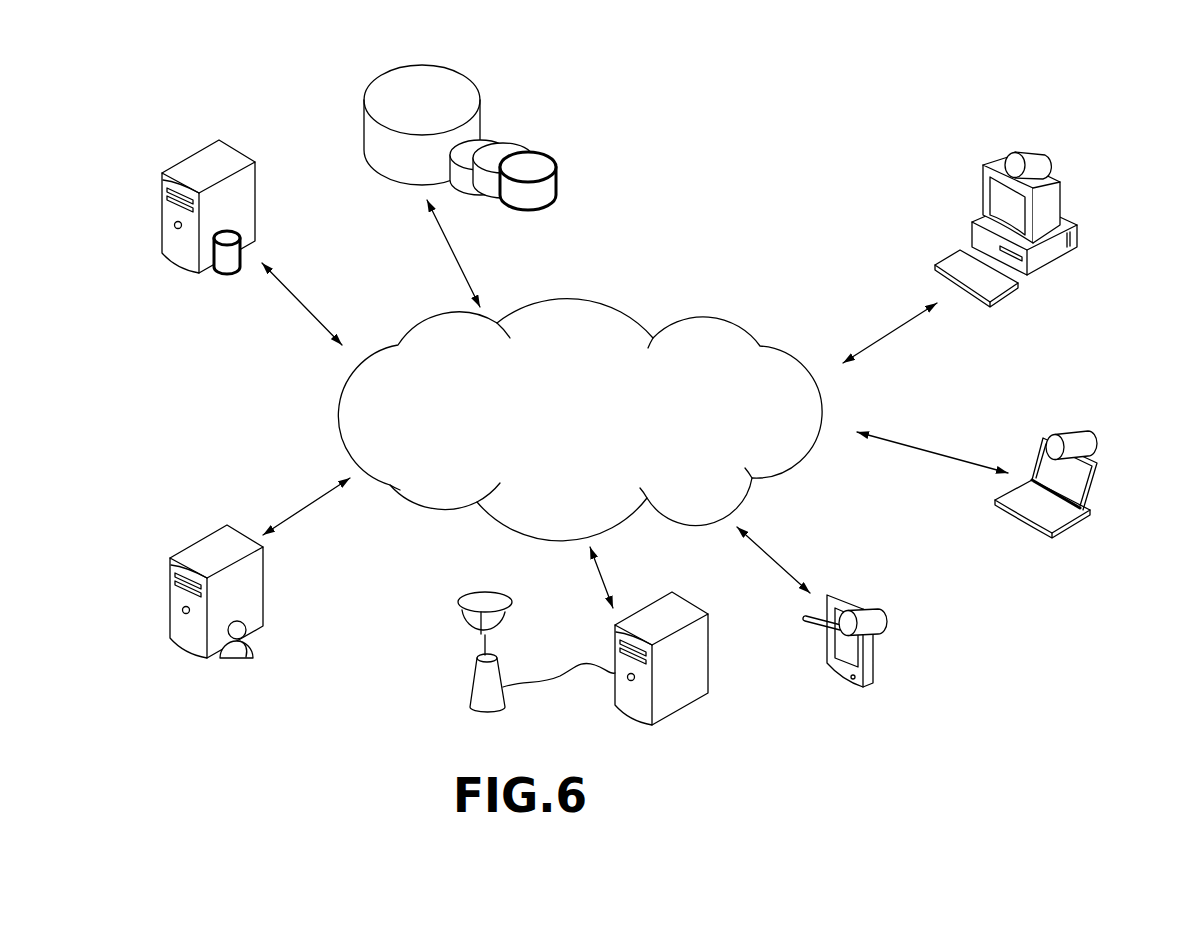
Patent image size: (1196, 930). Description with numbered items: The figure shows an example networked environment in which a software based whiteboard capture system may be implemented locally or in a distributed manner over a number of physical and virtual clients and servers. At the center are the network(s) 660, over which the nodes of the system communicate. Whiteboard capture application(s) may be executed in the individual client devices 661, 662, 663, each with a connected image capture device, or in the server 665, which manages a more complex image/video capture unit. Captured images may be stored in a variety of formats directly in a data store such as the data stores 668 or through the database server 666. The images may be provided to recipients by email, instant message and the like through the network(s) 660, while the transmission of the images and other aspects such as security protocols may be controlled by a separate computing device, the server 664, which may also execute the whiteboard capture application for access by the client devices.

The network(s) 660 is at (672, 305).
The client device 661 is at (1064, 141).
The client device 662 is at (1111, 424).
The client device 663 is at (869, 584).
The server 664 is at (220, 670).
The server 665 is at (625, 735).
The database server 666 is at (223, 282).
The data stores 668 is at (444, 51).